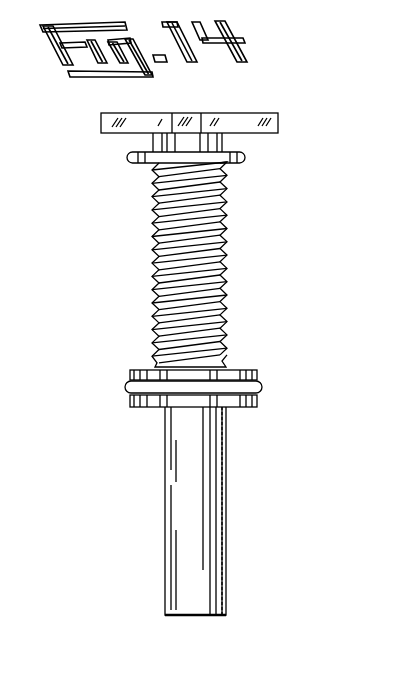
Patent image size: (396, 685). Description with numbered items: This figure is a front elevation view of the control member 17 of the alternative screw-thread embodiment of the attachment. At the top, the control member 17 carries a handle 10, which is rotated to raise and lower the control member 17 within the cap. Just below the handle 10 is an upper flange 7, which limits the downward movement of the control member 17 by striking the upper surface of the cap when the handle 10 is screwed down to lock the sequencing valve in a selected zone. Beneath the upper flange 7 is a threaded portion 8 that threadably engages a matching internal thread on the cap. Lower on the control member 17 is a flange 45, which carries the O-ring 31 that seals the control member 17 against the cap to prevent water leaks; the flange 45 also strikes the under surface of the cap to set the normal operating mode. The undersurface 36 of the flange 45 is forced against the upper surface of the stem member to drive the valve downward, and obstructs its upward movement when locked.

The handle 10 is at (247, 111).
The upper flange 7 is at (247, 154).
The threaded portion 8 is at (223, 267).
The flange 45 is at (150, 372).
The O-ring seal 31 is at (263, 387).
The undersurface of flange 36 is at (240, 407).
The control member 17 is at (223, 501).